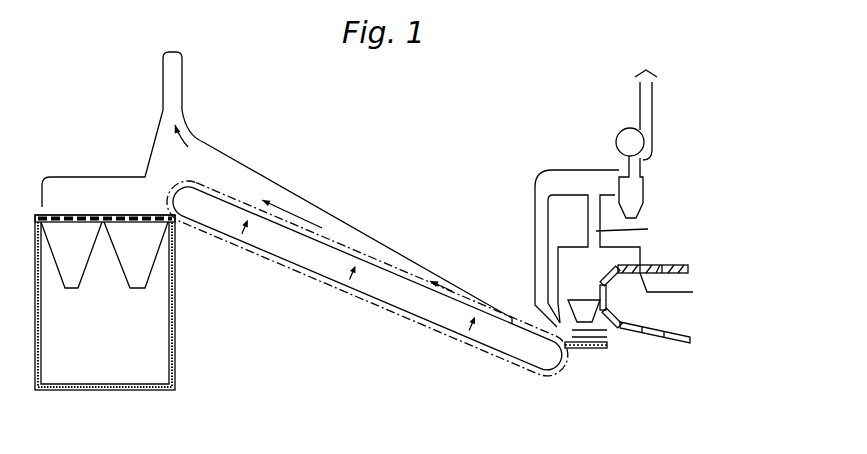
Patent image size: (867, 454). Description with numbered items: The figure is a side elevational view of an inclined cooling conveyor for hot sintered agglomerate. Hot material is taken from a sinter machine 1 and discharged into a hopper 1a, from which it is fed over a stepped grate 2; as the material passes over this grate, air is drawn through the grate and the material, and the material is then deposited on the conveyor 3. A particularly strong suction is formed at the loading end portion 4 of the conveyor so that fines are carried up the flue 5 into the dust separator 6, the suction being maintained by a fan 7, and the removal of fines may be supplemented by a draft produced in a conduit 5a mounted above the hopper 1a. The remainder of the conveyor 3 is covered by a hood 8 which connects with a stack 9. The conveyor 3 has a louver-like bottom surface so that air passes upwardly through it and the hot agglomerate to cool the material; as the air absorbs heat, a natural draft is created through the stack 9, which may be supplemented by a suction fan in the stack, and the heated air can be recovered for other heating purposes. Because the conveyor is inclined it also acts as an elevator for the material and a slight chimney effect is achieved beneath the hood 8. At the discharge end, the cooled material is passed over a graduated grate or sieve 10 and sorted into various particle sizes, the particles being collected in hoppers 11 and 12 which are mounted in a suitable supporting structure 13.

The sinter machine 1 is at (668, 265).
The hopper 1a is at (585, 306).
The stepped grate 2 is at (593, 343).
The conveyor 3 is at (426, 319).
The loading end portion 4 is at (530, 320).
The flue 5 is at (540, 203).
The conduit 5a is at (633, 231).
The dust separator 6 is at (623, 178).
The fan 7 is at (630, 130).
The hood 8 is at (303, 213).
The stack 9 is at (181, 82).
The graduated grate or sieve 10 is at (120, 215).
The hopper 11 is at (137, 280).
The hopper 12 is at (71, 280).
The supporting structure 13 is at (177, 300).